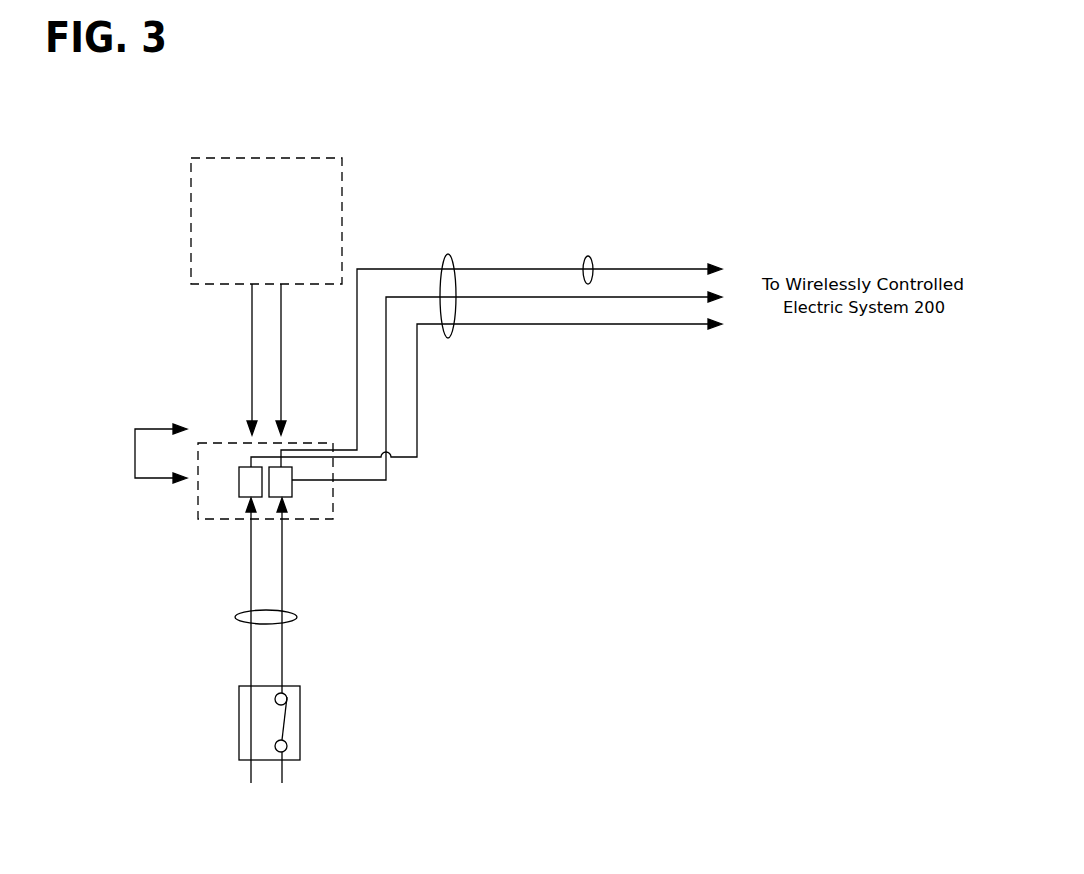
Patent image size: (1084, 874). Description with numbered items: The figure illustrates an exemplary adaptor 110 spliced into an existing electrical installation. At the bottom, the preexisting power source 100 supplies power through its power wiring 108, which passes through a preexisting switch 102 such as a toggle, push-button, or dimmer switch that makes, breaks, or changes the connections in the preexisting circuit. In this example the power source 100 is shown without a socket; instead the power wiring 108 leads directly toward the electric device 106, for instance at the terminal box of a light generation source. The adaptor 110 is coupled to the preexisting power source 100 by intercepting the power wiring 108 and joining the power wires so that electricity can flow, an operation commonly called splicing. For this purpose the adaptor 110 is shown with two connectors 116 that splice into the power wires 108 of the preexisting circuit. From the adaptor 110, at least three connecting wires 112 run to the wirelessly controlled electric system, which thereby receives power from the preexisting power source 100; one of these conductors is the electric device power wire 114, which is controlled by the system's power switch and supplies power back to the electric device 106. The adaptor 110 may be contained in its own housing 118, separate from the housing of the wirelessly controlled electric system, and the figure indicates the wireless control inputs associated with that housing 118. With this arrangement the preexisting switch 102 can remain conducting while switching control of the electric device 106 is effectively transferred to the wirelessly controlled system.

The preexisting power source 100 is at (333, 804).
The preexisting switch 102 is at (333, 705).
The electric device 106 is at (363, 158).
The power wiring 108 is at (333, 609).
The adaptor 110 is at (333, 530).
The connecting wires 112 is at (448, 338).
The electric device power wire 114 is at (586, 257).
The connectors 116 is at (237, 502).
The housing 118 is at (227, 437).